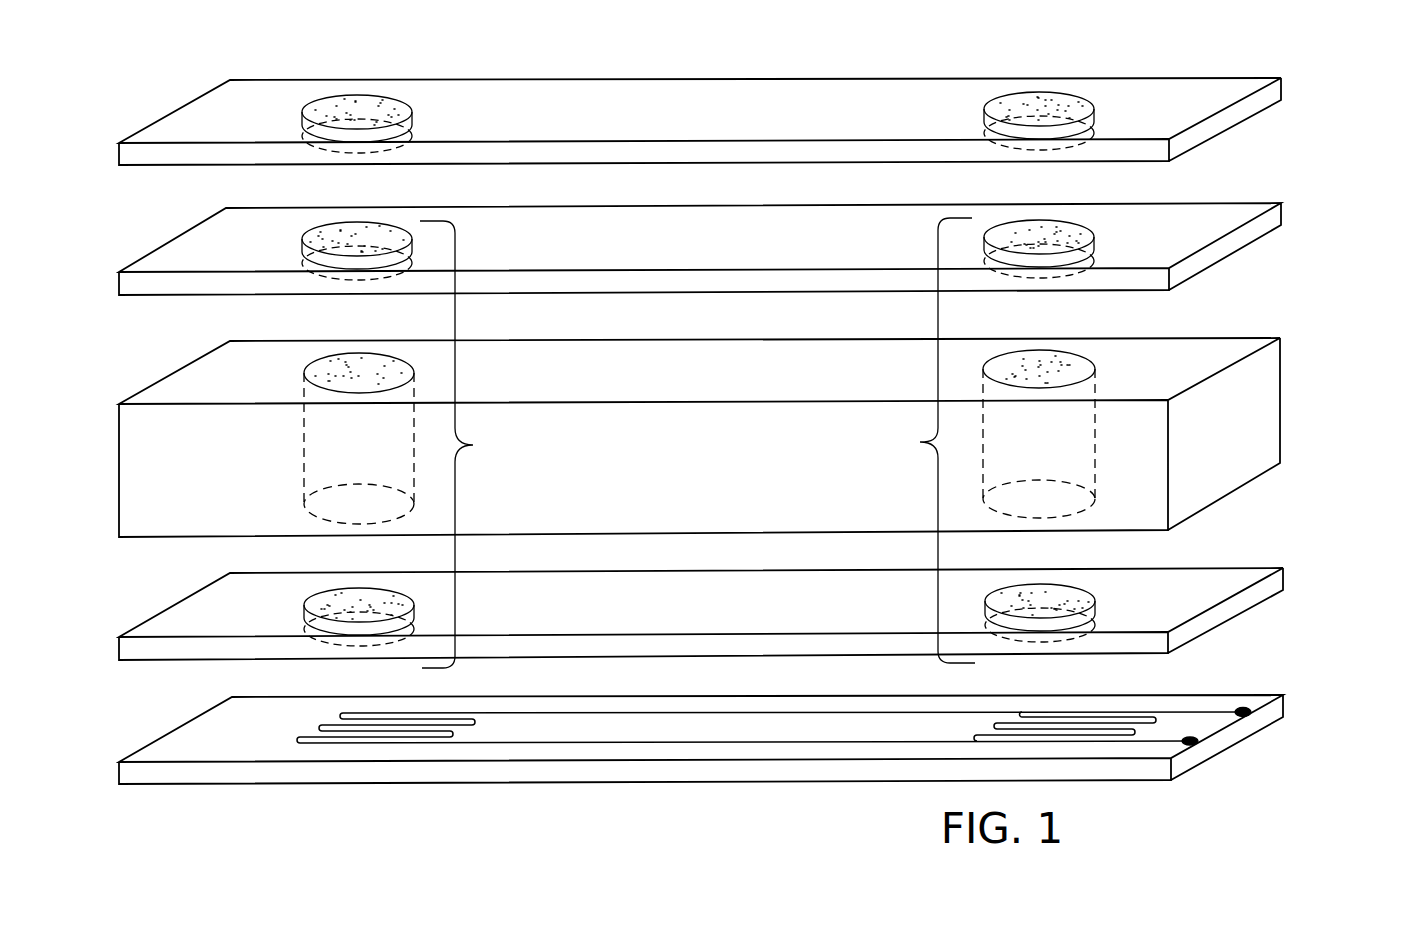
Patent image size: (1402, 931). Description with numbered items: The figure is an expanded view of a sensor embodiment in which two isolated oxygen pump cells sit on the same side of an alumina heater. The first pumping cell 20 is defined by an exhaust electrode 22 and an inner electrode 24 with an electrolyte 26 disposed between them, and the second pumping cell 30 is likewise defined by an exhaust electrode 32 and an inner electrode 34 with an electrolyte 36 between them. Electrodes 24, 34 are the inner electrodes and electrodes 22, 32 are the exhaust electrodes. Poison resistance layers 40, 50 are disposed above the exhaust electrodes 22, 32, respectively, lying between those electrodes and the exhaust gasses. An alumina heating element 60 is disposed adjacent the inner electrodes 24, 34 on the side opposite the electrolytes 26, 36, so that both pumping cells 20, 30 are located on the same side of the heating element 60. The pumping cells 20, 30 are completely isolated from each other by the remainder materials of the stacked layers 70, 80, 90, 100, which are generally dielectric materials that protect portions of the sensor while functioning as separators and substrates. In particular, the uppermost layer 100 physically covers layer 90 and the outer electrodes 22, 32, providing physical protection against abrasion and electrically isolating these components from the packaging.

The layer 100 is at (1250, 132).
The layer 90 is at (1252, 262).
The layer 80 is at (1250, 503).
The layer 70 is at (1252, 626).
The alumina heating element 60 is at (723, 735).
The poison resistance layer 40 is at (352, 100).
The poison resistance layer 50 is at (1050, 93).
The pumping cell 20 is at (468, 444).
The electrode 22 is at (332, 240).
The electrode 24 is at (323, 602).
The electrolyte 26 is at (327, 417).
The pumping cell 30 is at (928, 440).
The electrode 32 is at (1082, 230).
The electrode 34 is at (1083, 597).
The electrolyte 36 is at (1083, 413).